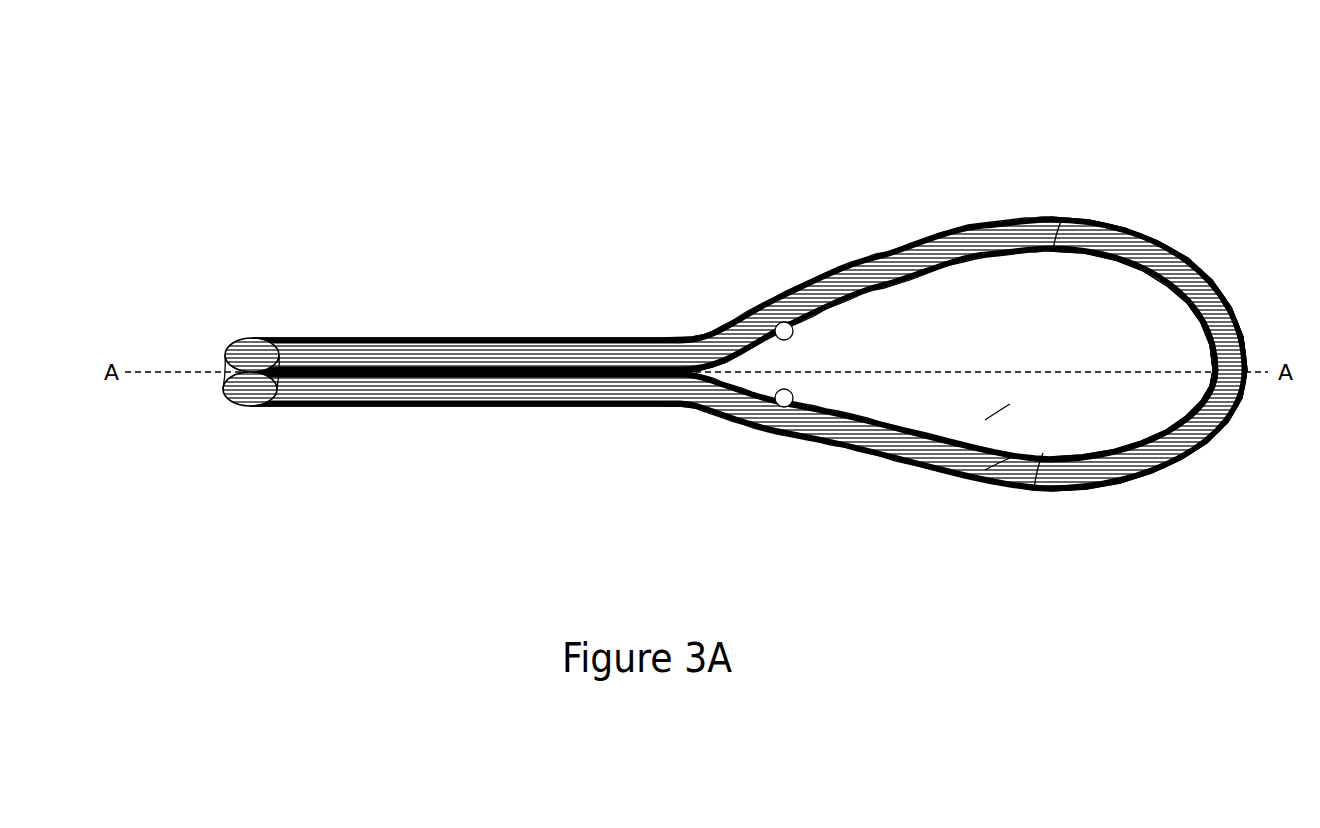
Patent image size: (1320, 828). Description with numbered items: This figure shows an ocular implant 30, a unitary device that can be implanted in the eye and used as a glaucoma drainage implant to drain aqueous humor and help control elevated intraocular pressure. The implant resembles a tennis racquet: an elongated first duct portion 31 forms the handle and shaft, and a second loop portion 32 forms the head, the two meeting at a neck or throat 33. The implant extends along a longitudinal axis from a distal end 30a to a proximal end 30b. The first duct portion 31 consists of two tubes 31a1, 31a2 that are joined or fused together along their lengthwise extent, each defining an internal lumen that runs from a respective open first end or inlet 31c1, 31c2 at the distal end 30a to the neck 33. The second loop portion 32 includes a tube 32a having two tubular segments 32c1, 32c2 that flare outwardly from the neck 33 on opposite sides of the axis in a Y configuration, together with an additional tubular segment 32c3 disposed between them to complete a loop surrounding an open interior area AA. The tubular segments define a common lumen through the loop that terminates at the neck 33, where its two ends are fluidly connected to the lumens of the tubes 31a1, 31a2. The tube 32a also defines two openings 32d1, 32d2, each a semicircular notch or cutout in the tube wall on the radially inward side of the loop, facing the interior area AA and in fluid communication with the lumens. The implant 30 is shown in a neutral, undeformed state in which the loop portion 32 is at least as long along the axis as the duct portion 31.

The ocular implant 30 is at (758, 142).
The first duct portion 31 is at (358, 323).
The first open end or inlet 31c1 is at (252, 355).
The second open end or inlet 31c2 is at (248, 388).
The distal end 30a is at (277, 405).
The first tube 31a1 is at (500, 336).
The second tube 31a2 is at (504, 410).
The neck or throat 33 is at (673, 333).
The first tubular segment 32c1 is at (810, 290).
The second tubular segment 32c2 is at (810, 442).
The first opening 32d1 is at (779, 339).
The second opening 32d2 is at (789, 396).
The additional tubular segment 32c3 is at (1170, 240).
The second loop portion 32 is at (1053, 508).
The tube of the second loop portion 32a is at (1190, 457).
The proximal end 30b is at (1244, 388).
The open interior area AA is at (1000, 405).